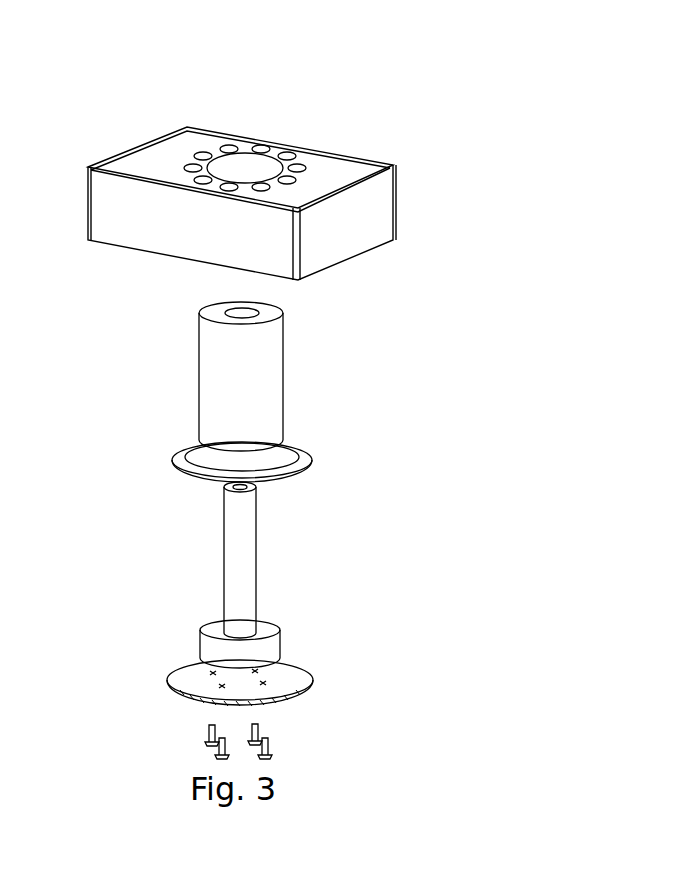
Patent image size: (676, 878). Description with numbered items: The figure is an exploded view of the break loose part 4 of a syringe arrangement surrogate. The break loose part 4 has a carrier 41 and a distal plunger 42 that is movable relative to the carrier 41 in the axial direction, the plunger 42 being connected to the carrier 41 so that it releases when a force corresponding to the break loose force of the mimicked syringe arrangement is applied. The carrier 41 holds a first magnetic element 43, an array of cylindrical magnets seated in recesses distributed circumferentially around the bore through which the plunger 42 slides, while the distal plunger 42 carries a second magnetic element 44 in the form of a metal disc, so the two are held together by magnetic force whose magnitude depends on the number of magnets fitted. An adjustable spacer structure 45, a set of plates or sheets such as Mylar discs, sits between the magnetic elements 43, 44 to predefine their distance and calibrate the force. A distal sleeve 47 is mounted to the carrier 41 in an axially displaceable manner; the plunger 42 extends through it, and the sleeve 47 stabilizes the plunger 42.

The break loose part 4 is at (467, 305).
The carrier 41 is at (377, 208).
The distal plunger 42 is at (222, 568).
The first magnetic element 43 is at (205, 178).
The second magnetic element 44 is at (183, 680).
The adjustable spacer structure 45 is at (302, 453).
The distal sleeve 47 is at (263, 370).